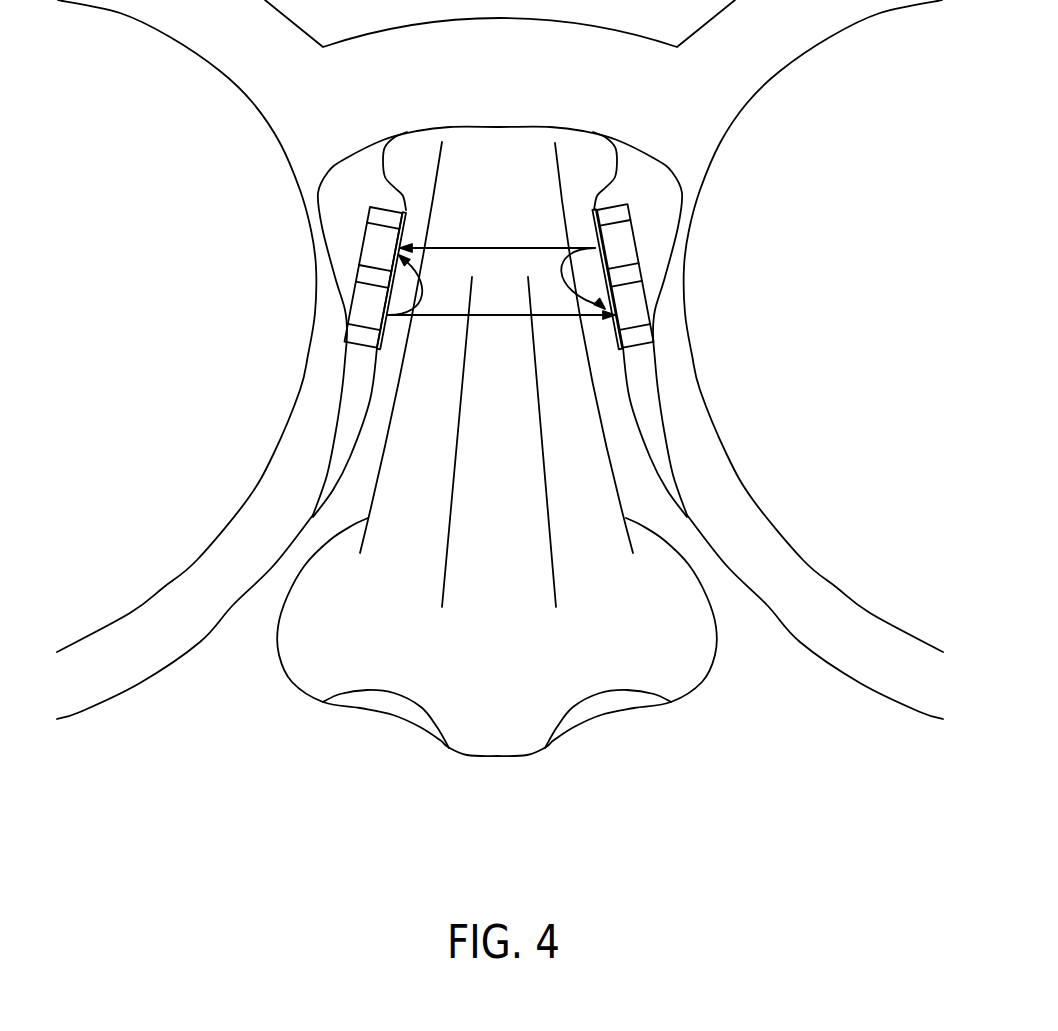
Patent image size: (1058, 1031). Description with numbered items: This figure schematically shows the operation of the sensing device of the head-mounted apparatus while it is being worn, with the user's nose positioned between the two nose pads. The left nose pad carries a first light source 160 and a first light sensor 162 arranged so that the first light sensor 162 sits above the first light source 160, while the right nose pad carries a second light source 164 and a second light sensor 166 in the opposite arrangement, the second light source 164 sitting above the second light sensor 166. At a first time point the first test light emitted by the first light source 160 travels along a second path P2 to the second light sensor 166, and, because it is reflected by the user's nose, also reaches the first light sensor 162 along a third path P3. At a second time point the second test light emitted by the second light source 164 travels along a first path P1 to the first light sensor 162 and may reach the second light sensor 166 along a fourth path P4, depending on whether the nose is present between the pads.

The first light source 160 is at (351, 307).
The first light sensor 162 is at (364, 240).
The second light source 164 is at (635, 247).
The second light sensor 166 is at (647, 304).
The first path P1 is at (497, 235).
The second path P2 is at (501, 330).
The third path P3 is at (420, 285).
The fourth path P4 is at (568, 278).